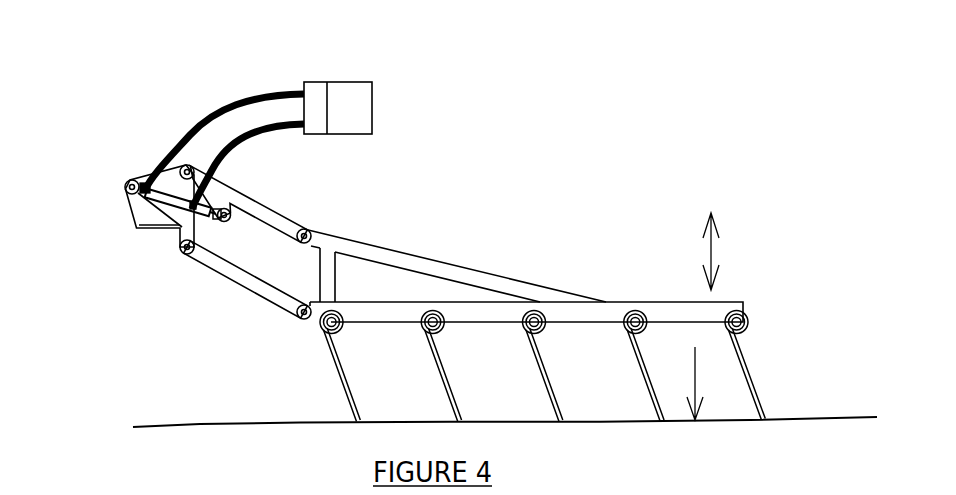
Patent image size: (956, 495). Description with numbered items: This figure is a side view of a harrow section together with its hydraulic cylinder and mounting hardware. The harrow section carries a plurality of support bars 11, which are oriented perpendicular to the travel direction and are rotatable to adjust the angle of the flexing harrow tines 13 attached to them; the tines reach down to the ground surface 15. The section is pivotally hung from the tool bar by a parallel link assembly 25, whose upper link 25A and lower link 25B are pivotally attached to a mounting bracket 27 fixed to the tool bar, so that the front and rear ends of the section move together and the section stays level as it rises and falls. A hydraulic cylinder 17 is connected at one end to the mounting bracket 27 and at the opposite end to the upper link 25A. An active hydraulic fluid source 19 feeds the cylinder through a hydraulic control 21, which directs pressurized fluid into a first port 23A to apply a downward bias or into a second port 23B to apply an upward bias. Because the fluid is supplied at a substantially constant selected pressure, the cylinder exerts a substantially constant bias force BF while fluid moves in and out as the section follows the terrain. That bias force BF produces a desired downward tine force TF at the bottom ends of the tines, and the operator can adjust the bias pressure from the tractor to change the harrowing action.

The support bar 11 is at (542, 313).
The harrow tine 13 is at (697, 378).
The ground surface 15 is at (163, 421).
The hydraulic cylinder 17 is at (163, 197).
The active hydraulic fluid source 19 is at (329, 79).
The hydraulic control 21 is at (308, 82).
The first port 23A is at (175, 165).
The second port 23B is at (147, 180).
The parallel link assembly 25 is at (228, 253).
The upper link 25A is at (248, 196).
The lower link 25B is at (233, 281).
The mounting bracket 27 is at (150, 198).
The bias force BF is at (711, 255).
The tine force TF is at (748, 370).